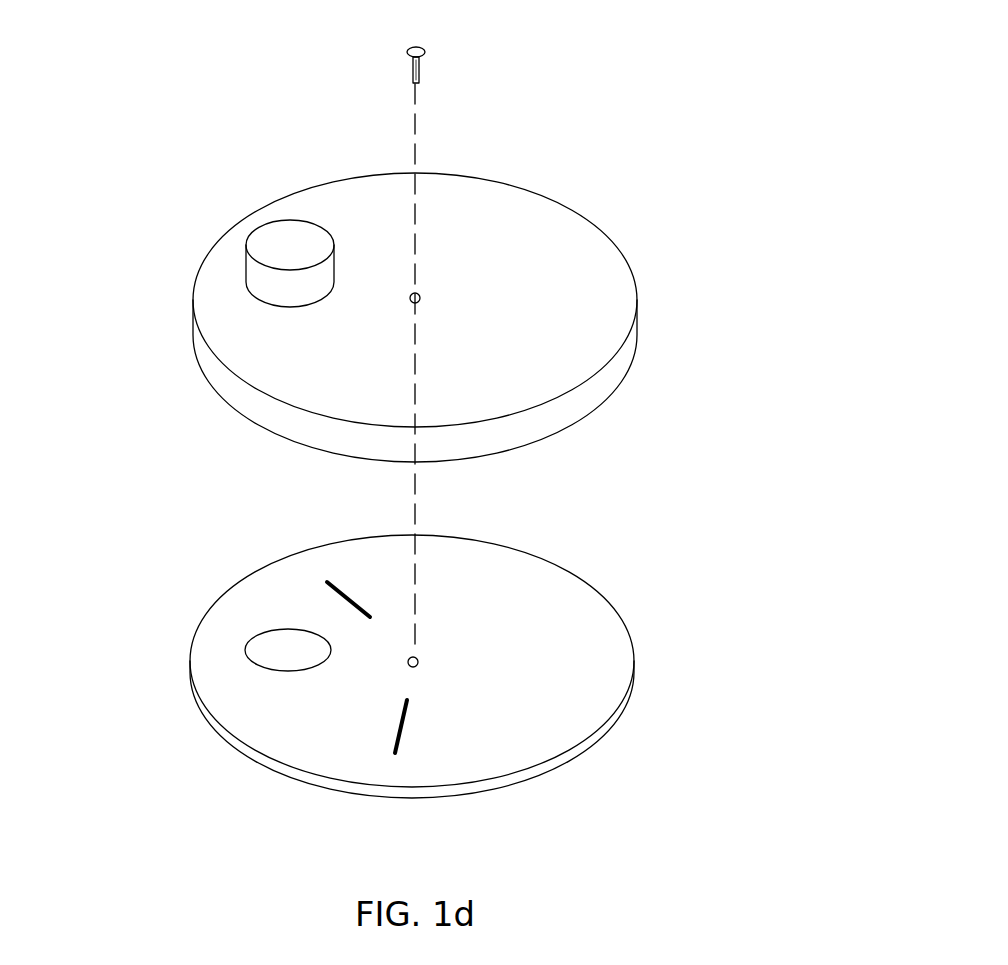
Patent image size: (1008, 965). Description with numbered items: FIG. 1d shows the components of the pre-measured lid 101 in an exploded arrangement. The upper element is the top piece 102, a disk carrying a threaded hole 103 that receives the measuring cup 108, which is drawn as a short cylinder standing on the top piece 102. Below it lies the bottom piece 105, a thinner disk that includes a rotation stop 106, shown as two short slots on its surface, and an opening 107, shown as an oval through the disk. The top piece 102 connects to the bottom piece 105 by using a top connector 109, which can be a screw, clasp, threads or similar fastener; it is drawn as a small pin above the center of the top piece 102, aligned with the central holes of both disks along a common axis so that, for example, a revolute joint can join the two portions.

The pre-measured lid 101 is at (758, 692).
The top piece 102 is at (582, 238).
The threaded hole 103 is at (272, 304).
The bottom piece 105 is at (540, 730).
The rotation stop 106 is at (330, 580).
The opening 107 is at (247, 653).
The measuring cup 108 is at (263, 232).
The top connector 109 is at (420, 72).